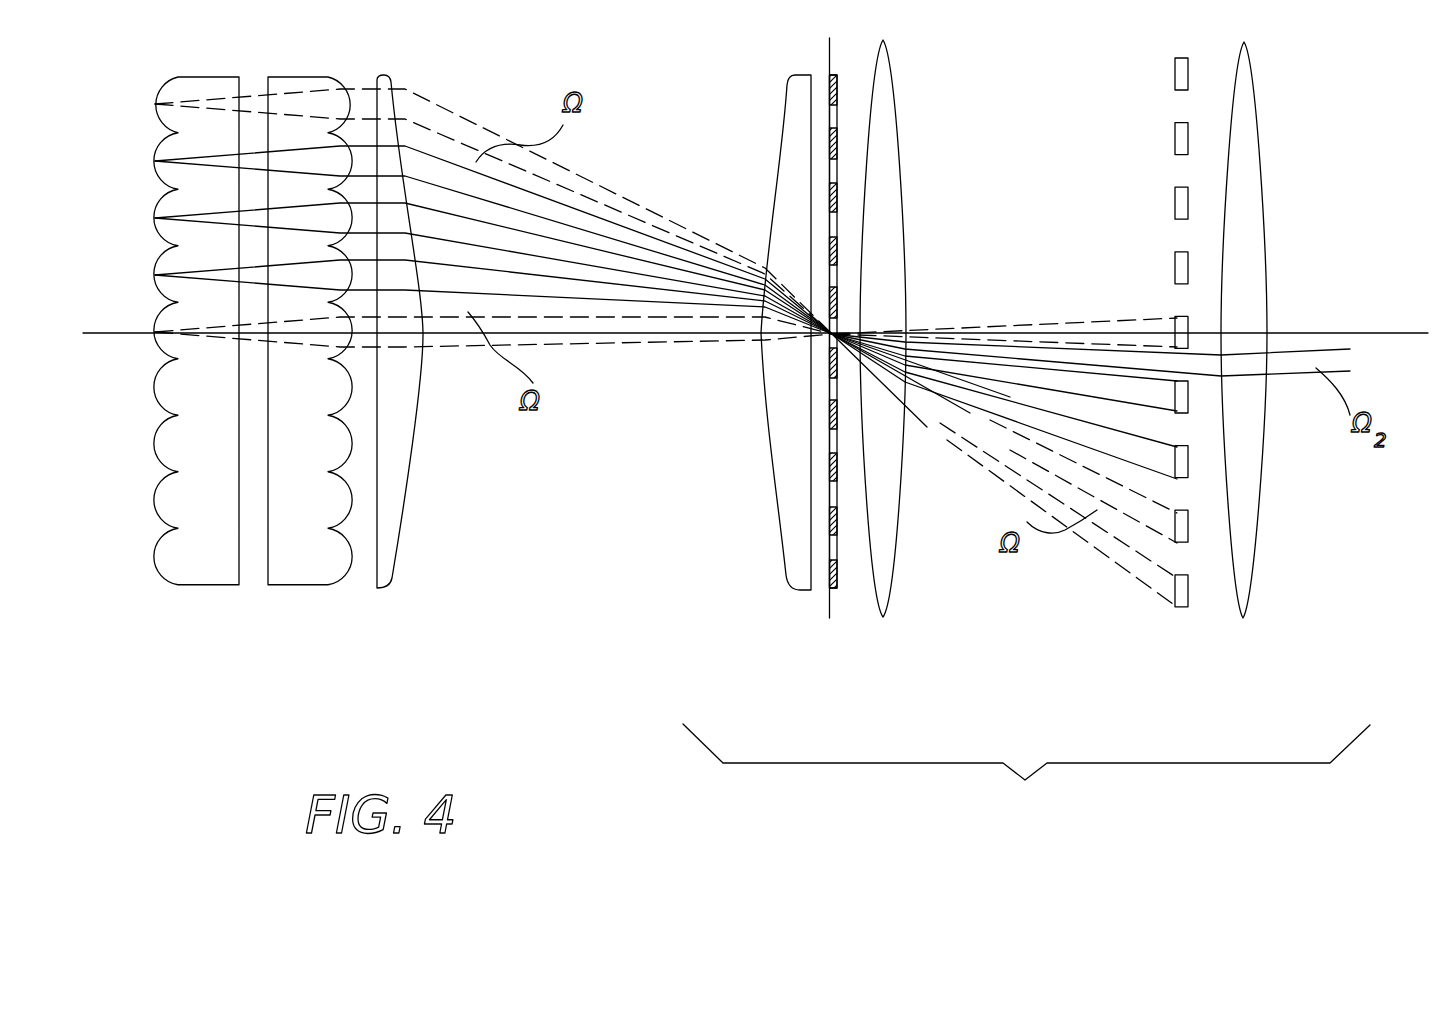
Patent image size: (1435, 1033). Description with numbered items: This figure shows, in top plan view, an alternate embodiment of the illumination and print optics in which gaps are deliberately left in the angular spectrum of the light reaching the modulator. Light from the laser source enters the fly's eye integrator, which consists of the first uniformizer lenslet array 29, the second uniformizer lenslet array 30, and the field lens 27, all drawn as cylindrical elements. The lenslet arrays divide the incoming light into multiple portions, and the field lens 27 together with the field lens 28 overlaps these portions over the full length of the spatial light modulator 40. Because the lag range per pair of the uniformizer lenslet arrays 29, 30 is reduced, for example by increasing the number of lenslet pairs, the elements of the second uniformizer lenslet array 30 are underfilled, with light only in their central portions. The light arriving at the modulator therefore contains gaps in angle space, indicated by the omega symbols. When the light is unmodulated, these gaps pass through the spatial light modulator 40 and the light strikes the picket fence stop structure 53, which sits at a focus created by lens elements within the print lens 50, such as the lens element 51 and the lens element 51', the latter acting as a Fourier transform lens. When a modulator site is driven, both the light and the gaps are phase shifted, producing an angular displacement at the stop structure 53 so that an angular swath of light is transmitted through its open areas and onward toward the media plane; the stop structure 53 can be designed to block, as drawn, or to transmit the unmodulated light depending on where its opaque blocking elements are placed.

The field lens 27 is at (398, 502).
The field lens 28 is at (790, 500).
The first uniformizer lenslet array 29 is at (218, 570).
The second uniformizer lenslet array 30 is at (288, 560).
The spatial light modulator 40 is at (827, 613).
The print lens 50 is at (1026, 775).
The lens element 51 is at (924, 334).
The lens element 51' is at (1292, 333).
The picket fence stop structure 53 is at (1175, 603).